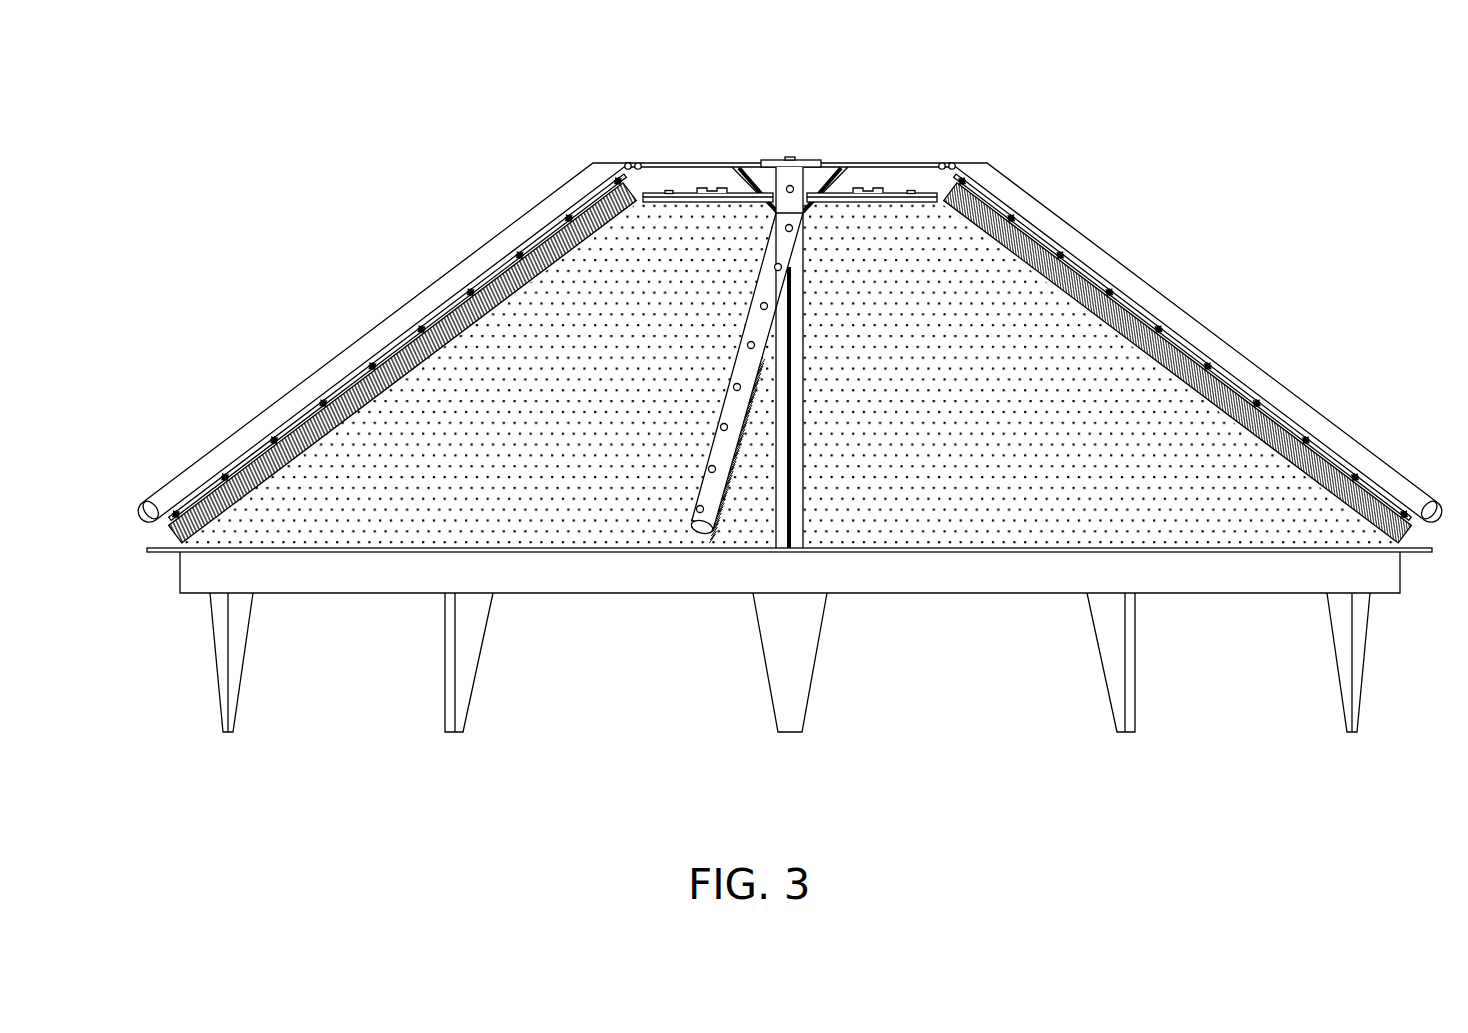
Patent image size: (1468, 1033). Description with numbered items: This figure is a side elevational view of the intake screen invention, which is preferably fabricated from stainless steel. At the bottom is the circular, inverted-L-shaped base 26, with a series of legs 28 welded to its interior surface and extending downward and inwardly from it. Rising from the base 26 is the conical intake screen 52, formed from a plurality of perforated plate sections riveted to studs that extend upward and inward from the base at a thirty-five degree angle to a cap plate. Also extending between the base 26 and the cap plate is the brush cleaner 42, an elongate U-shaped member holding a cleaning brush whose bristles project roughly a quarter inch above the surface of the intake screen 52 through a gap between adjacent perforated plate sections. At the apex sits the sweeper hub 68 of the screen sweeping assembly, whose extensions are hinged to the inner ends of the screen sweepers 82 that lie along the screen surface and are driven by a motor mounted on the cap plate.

The circular, inverted-L-shaped base 26 is at (1010, 593).
The legs 28 is at (228, 732).
The brush cleaner 42 is at (798, 512).
The conical intake screen 52 is at (613, 513).
The sweeper hub 68 is at (865, 138).
The screen sweepers 82 is at (385, 305).